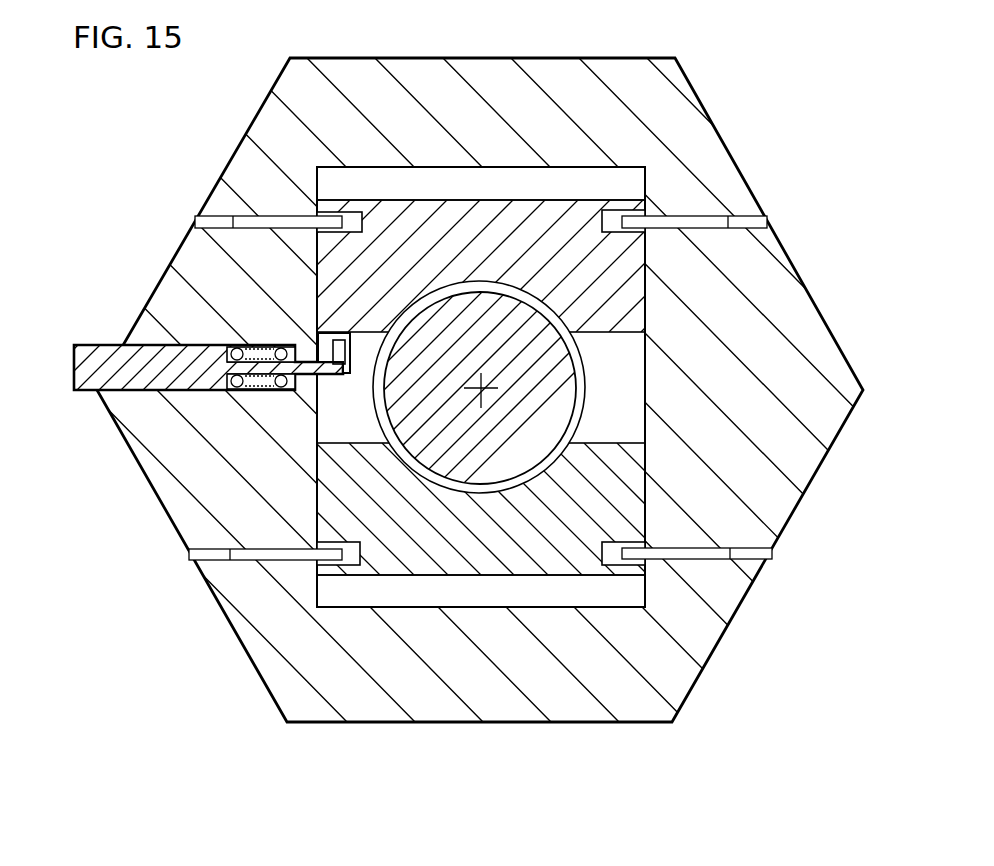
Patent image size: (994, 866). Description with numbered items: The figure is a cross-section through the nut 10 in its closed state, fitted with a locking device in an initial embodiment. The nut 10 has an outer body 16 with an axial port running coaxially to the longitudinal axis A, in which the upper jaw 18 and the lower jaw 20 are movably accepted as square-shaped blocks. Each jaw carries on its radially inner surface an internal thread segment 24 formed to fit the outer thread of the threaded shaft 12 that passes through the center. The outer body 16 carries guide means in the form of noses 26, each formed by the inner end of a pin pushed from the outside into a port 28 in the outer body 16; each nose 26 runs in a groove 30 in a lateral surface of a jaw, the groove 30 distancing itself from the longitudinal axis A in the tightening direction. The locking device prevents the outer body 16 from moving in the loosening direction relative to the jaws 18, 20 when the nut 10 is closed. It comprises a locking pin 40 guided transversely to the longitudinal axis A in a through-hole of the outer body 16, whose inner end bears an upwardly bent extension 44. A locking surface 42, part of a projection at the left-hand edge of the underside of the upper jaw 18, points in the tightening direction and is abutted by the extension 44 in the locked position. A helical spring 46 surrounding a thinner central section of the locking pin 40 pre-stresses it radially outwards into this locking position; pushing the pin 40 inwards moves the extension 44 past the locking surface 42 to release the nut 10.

The nut 10 is at (497, 415).
The threaded shaft 12 is at (592, 365).
The outer body 16 is at (677, 60).
The upper jaw 18 is at (330, 198).
The lower jaw 20 is at (575, 577).
The internal thread segment 24 is at (428, 487).
The nose 26 is at (636, 198).
The port 28 is at (743, 556).
The groove 30 is at (343, 572).
The locking pin 40 is at (187, 356).
The locking surface 42 is at (350, 355).
The extension 44 is at (318, 345).
The helical spring 46 is at (240, 385).
The longitudinal axis A is at (484, 395).